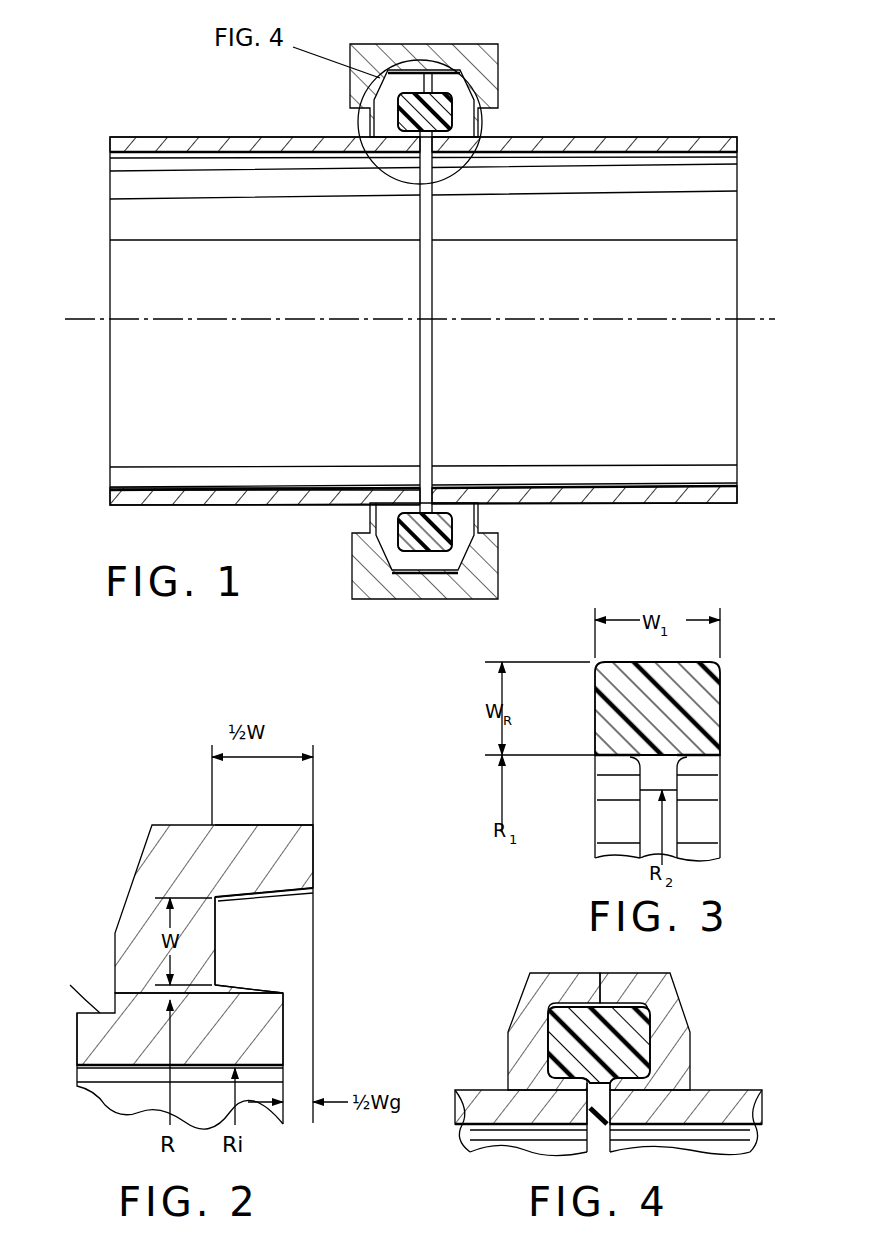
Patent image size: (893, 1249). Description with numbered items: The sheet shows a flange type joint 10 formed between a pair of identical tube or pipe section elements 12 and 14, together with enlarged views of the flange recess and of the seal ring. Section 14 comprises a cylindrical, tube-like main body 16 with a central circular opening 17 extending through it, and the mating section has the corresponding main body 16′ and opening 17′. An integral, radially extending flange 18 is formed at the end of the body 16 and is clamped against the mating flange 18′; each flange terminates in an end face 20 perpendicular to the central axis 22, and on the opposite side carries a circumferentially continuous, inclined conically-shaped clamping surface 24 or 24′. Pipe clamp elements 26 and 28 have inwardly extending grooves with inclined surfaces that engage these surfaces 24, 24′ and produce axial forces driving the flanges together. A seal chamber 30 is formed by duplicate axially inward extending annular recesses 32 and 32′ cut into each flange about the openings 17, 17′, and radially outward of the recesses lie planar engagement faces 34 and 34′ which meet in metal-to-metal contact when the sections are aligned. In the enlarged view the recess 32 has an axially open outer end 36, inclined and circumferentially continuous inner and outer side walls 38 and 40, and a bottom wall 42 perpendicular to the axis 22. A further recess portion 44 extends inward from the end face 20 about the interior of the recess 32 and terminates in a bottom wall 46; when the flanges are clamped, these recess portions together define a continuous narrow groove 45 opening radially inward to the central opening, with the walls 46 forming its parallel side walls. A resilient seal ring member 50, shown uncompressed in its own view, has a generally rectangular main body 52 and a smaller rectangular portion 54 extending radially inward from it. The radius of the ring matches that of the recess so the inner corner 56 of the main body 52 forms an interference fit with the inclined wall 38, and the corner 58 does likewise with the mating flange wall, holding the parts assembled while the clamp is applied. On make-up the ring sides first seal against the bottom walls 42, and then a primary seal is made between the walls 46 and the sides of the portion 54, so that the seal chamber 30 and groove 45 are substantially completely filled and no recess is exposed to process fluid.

In FIG. 1, the flange type joint 10 is at (515, 44).
In FIG. 1, the tube or pipe section element 12 is at (705, 130).
In FIG. 1, the tube or pipe section element 14 is at (140, 130).
In FIG. 1, the cylindrical tube-like main body 16 is at (225, 137).
In FIG. 2, the cylindrical tube-like main body 16 is at (95, 1010).
In FIG. 4, the cylindrical tube-like main body 16 is at (495, 1087).
In FIG. 1, the cylindrical tube-like main body 16′ is at (592, 137).
In FIG. 4, the cylindrical tube-like main body 16′ is at (735, 1090).
In FIG. 1, the central circular opening 17 is at (135, 213).
In FIG. 1, the central circular opening 17′ is at (695, 285).
In FIG. 1, the flange 18 is at (352, 120).
In FIG. 2, the flange 18 is at (100, 905).
In FIG. 4, the flange 18 is at (512, 985).
In FIG. 1, the flange 18′ is at (497, 122).
In FIG. 4, the flange 18′ is at (720, 1000).
In FIG. 2, the end face 20 is at (315, 965).
In FIG. 1, the central axis 22 is at (132, 318).
In FIG. 2, the inclined conically-shaped surface 24 is at (143, 843).
In FIG. 4, the inclined conically-shaped surface 24 is at (512, 1018).
In FIG. 4, the inclined conically-shaped surface 24′ is at (690, 1020).
In FIG. 1, the pipe clamp element 26 is at (352, 580).
In FIG. 1, the pipe clamp element 28 is at (372, 82).
In FIG. 1, the seal chamber 30 is at (430, 88).
In FIG. 1, the annular recess 32 is at (404, 123).
In FIG. 2, the annular recess 32 is at (315, 892).
In FIG. 4, the annular recess 32 is at (570, 1065).
In FIG. 1, the annular recess 32′ is at (438, 128).
In FIG. 4, the annular recess 32′ is at (620, 1065).
In FIG. 1, the planar engagement face 34 is at (412, 600).
In FIG. 2, the planar engagement face 34 is at (315, 842).
In FIG. 4, the planar engagement face 34 is at (560, 973).
In FIG. 1, the planar engagement face 34′ is at (422, 558).
In FIG. 4, the planar engagement face 34′ is at (600, 992).
In FIG. 2, the axially open outer end 36 is at (300, 938).
In FIG. 2, the inner side wall 38 is at (252, 993).
In FIG. 2, the outer side wall 40 is at (258, 893).
In FIG. 2, the bottom wall 42 is at (214, 936).
In FIG. 2, the recess portion 44 is at (298, 1013).
In FIG. 2, the narrow groove 45 is at (318, 1128).
In FIG. 2, the bottom wall 46 is at (286, 1036).
In FIG. 3, the seal ring member 50 is at (727, 682).
In FIG. 3, the main body 52 is at (620, 665).
In FIG. 3, the smaller portion 54 is at (665, 775).
In FIG. 3, the inner corner 56 is at (598, 760).
In FIG. 3, the corner 58 is at (720, 758).